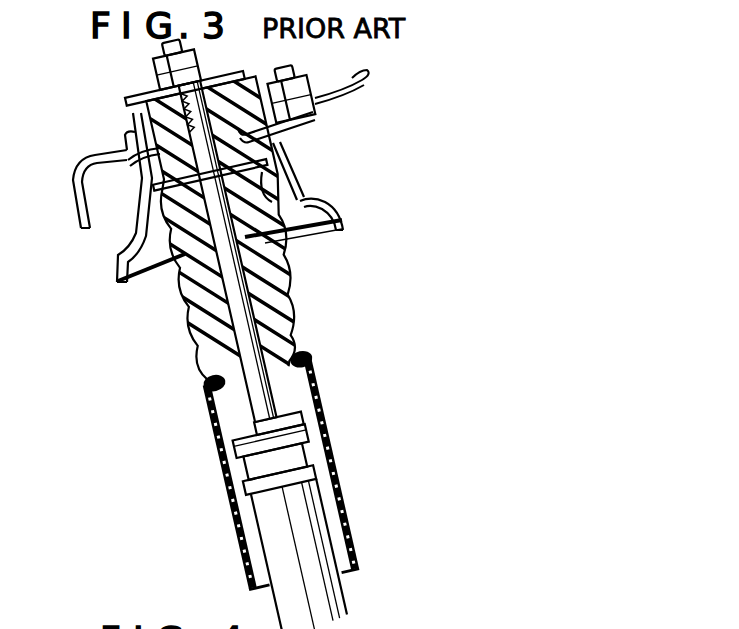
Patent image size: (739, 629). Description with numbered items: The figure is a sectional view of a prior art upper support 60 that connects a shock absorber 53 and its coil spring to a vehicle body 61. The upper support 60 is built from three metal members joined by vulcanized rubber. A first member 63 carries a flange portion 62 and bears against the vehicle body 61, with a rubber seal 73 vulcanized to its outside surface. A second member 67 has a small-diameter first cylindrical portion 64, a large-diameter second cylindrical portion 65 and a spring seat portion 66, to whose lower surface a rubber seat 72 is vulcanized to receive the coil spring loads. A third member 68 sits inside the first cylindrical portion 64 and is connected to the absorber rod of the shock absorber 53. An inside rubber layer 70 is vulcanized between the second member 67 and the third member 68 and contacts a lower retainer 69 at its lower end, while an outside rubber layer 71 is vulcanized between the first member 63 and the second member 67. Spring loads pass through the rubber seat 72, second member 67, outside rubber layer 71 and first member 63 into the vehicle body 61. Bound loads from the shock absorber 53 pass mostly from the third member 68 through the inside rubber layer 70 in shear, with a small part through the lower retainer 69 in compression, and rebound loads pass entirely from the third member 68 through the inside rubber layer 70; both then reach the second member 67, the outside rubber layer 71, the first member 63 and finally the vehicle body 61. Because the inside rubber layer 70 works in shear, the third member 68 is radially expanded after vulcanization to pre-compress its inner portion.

The shock absorber 53 is at (307, 537).
The upper support 60 is at (129, 187).
The vehicle body 61 is at (366, 84).
The flange portion 62 is at (317, 101).
The first member 63 is at (244, 86).
The first cylindrical portion 64 is at (131, 121).
The second cylindrical portion 65 is at (115, 257).
The spring seat portion 66 is at (297, 230).
The second member 67 is at (345, 222).
The third member 68 is at (147, 95).
The lower retainer 69 is at (300, 186).
The inside rubber layer 70 is at (280, 160).
The outside rubber layer 71 is at (128, 163).
The rubber seat 72 is at (138, 274).
The rubber seal 73 is at (284, 126).